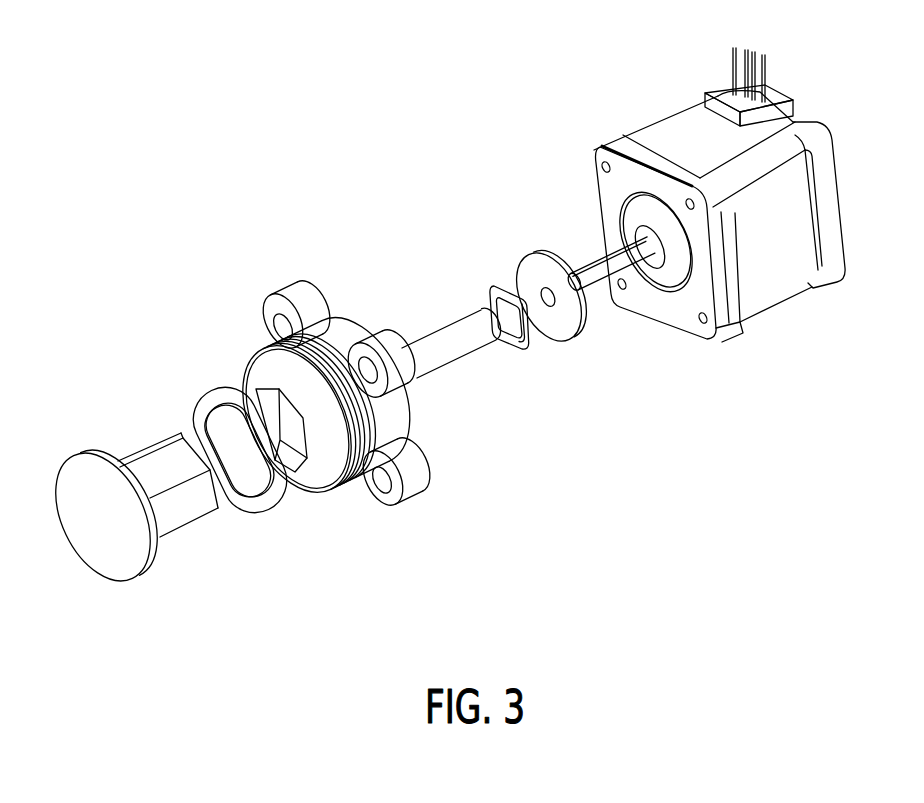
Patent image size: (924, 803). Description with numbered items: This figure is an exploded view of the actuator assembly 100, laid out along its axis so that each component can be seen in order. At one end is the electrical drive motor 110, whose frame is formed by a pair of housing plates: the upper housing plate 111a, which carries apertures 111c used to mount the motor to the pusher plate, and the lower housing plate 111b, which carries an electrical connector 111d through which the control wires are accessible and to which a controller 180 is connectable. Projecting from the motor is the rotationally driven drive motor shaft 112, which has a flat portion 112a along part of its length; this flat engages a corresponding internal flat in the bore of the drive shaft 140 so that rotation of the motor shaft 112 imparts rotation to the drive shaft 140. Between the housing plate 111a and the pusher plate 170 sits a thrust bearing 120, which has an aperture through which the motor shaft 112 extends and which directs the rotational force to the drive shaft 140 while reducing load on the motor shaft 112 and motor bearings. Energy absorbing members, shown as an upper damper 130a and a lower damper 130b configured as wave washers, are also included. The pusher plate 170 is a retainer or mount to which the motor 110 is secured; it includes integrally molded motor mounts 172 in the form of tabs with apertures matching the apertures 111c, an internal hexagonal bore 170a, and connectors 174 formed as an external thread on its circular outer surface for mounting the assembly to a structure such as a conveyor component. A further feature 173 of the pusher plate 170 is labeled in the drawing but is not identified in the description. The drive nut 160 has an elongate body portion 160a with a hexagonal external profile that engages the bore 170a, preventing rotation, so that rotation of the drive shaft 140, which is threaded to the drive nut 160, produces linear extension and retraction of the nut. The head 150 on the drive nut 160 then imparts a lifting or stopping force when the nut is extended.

The actuator assembly 100 is at (128, 210).
The electrical drive motor 110 is at (733, 216).
The upper housing plate 111a is at (728, 339).
The lower housing plate 111b is at (847, 250).
The apertures 111c is at (689, 199).
The electrical connector 111d is at (728, 85).
The drive motor shaft 112 is at (601, 285).
The flat portion 112a is at (586, 264).
The thrust bearing 120 is at (533, 250).
The upper damper 130a is at (205, 403).
The lower damper 130b is at (518, 347).
The drive shaft 140 is at (432, 335).
The head 150 is at (107, 557).
The drive nut 160 is at (165, 478).
The elongate body portion 160a is at (183, 510).
The pusher plate 170 is at (325, 412).
The internal hexagonal bore 170a is at (273, 412).
The motor mounts 172 is at (295, 298).
The hub flange 173 is at (297, 480).
The connectors 174 is at (337, 478).
The controller 180 is at (782, 98).